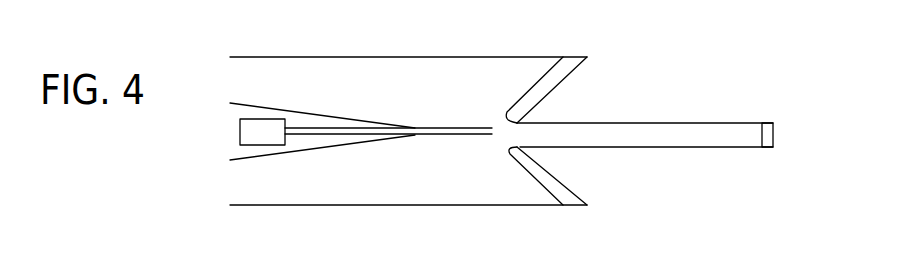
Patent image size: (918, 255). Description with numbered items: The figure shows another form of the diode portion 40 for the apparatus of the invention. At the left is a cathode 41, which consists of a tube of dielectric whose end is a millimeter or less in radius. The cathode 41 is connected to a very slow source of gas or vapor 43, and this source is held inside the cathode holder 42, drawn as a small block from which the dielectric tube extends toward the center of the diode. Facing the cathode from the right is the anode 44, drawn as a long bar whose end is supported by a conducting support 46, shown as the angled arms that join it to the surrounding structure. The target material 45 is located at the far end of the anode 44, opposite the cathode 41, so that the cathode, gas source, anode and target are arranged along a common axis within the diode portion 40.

The housing 40 is at (517, 57).
The cathode 41 is at (440, 128).
The cathode holder 42 is at (328, 115).
The source of gas or vapor 43 is at (258, 119).
The anode 44 is at (607, 123).
The target material 45 is at (772, 123).
The conducting support 46 is at (558, 78).